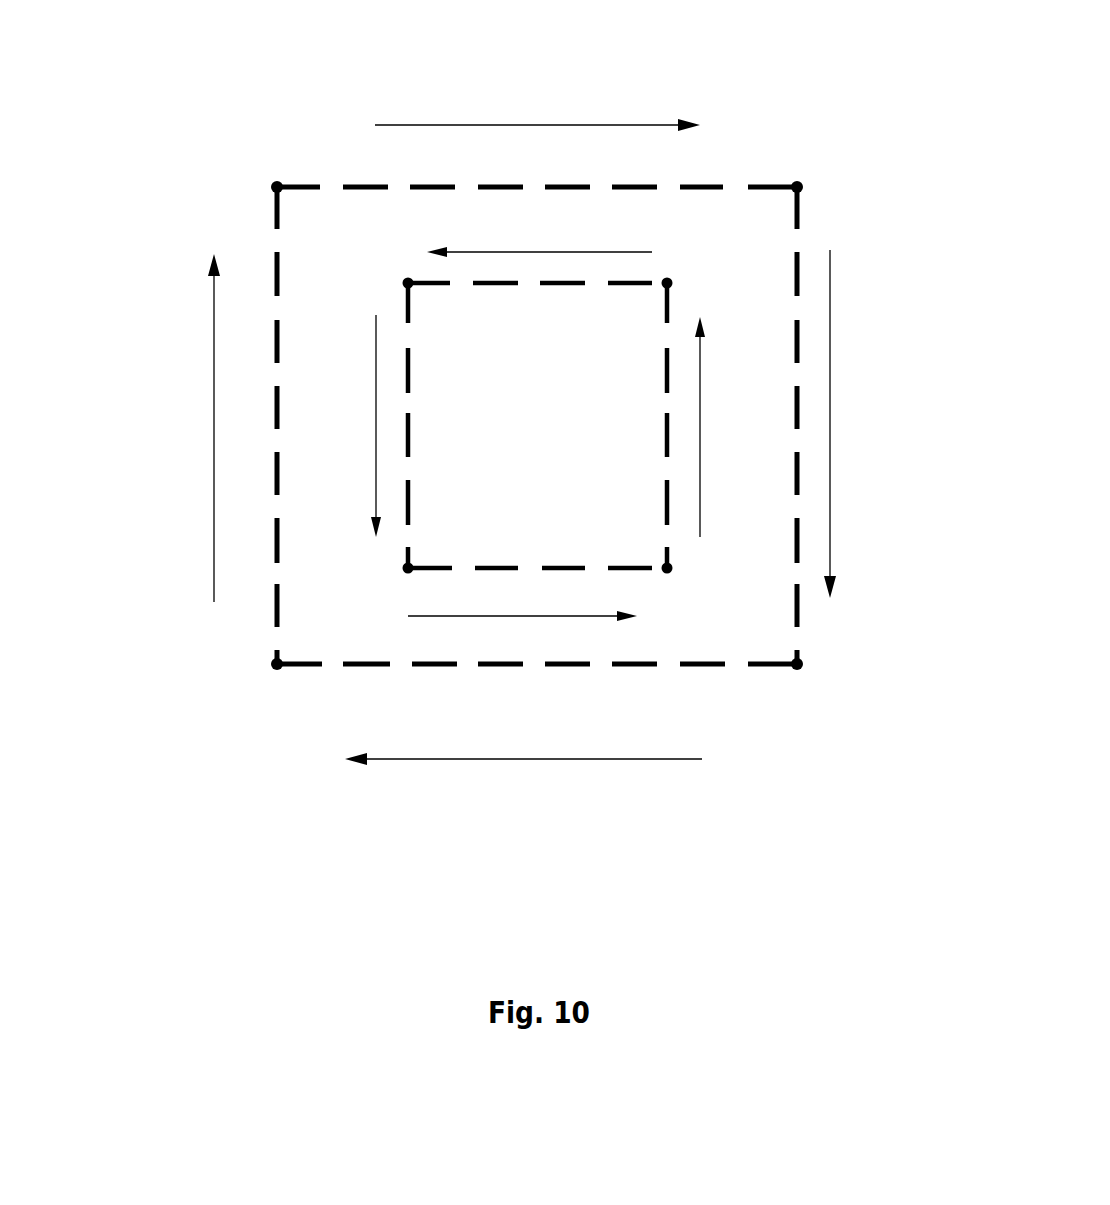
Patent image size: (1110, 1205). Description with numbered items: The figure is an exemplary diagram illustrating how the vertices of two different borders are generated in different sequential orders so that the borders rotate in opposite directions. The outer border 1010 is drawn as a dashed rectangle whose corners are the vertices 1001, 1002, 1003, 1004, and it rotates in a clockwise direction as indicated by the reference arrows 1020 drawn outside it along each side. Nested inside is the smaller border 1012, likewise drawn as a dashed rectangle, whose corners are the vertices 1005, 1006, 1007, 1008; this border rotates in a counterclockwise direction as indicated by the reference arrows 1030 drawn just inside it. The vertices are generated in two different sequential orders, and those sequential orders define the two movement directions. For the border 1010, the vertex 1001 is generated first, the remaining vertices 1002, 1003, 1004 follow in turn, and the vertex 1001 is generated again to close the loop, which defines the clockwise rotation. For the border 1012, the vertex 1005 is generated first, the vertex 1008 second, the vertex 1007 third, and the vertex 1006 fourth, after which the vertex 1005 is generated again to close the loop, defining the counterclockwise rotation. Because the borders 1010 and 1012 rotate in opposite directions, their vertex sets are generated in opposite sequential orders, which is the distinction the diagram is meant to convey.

The border 1010 is at (725, 187).
The border 1012 is at (667, 473).
The reference arrows 1020 is at (573, 125).
The reference arrows 1030 is at (582, 252).
The vertex 1001 is at (830, 178).
The vertex 1002 is at (835, 673).
The vertex 1003 is at (257, 684).
The vertex 1004 is at (239, 179).
The vertex 1005 is at (697, 270).
The vertex 1006 is at (701, 583).
The vertex 1007 is at (382, 582).
The vertex 1008 is at (374, 270).